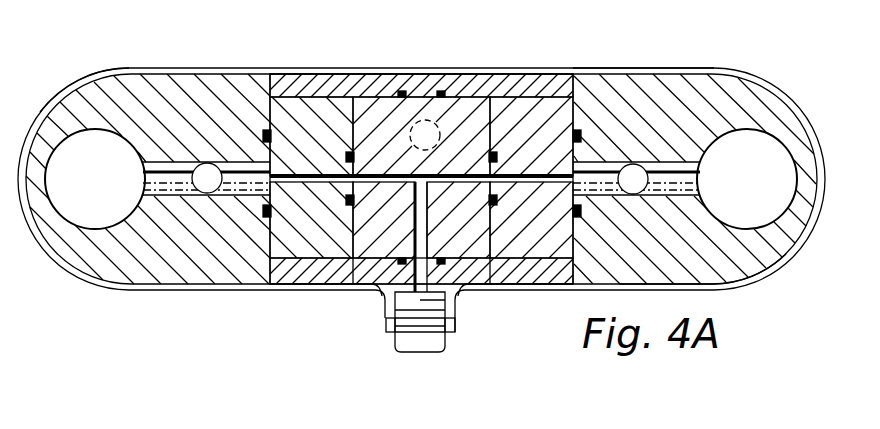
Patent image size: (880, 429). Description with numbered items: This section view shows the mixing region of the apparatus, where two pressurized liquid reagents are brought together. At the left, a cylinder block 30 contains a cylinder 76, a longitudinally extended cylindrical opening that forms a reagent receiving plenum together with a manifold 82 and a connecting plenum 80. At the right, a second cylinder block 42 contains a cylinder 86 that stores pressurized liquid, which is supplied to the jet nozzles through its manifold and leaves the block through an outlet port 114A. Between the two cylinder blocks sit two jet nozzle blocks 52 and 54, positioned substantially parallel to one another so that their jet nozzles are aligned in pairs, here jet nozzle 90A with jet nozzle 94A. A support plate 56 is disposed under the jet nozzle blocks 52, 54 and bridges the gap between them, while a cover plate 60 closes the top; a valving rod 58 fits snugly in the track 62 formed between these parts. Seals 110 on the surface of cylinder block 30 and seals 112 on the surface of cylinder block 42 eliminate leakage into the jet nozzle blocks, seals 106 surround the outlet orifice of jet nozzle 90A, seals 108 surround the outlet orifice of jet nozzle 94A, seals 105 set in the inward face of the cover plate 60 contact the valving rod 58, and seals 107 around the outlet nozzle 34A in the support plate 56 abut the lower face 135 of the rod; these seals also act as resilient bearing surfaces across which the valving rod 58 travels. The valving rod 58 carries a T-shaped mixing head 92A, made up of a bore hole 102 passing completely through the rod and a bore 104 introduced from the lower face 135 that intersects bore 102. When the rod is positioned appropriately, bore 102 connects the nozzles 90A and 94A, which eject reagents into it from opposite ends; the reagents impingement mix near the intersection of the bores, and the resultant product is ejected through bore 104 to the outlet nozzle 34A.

The cylinder block 30 is at (107, 268).
The outlet nozzle 34A is at (432, 347).
The cylinder block 42 is at (730, 84).
The jet nozzle block 52 is at (302, 110).
The jet nozzle block 54 is at (575, 70).
The support plate 56 is at (308, 282).
The valving rod 58 is at (365, 108).
The cover plate 60 is at (512, 80).
The track 62 is at (348, 272).
The cylinder 76 is at (68, 192).
The connecting plenum 80 is at (112, 78).
The manifold 82 is at (165, 180).
The cylinder 86 is at (730, 192).
The jet nozzle 90A is at (300, 168).
The mixing head 92A is at (414, 185).
The jet nozzle 94A is at (510, 172).
The bore hole 102 is at (455, 170).
The bore 104 is at (428, 220).
The seals 105 is at (440, 93).
The seals 106 is at (348, 200).
The seals 107 is at (383, 318).
The seals 108 is at (465, 268).
The seals 110 is at (263, 132).
The seals 112 is at (592, 140).
The outlet port 114A is at (740, 282).
The lower face 135 is at (462, 300).